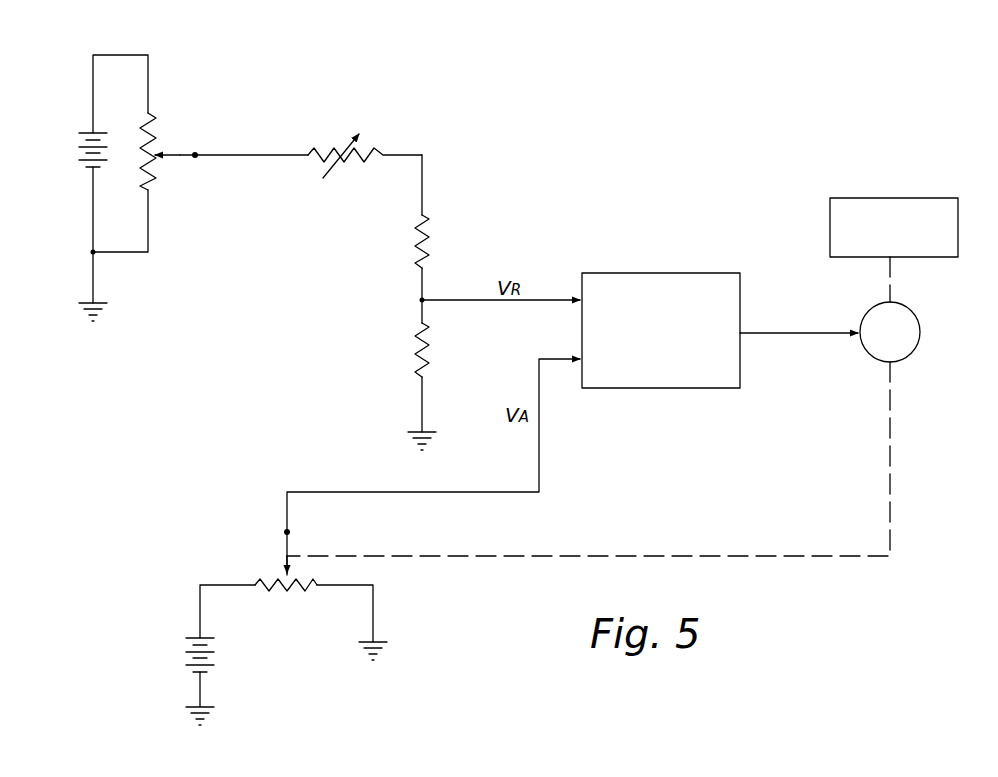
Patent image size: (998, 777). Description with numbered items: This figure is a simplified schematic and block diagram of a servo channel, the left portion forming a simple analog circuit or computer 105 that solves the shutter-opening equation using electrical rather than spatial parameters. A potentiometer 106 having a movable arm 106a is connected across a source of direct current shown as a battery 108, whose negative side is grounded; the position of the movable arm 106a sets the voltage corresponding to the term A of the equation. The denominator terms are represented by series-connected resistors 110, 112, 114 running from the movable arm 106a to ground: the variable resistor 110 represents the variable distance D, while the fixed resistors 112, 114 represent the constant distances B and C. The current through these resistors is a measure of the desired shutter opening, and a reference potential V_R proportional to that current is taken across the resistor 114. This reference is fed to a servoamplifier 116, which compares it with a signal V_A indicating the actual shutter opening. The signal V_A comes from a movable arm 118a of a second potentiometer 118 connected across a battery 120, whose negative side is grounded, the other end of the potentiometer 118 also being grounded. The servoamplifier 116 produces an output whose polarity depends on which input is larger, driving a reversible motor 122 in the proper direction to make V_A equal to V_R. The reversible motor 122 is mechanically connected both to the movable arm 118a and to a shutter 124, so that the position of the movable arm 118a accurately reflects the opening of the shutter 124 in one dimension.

The analog circuit 105 is at (205, 235).
The potentiometer 106 is at (156, 133).
The movable arm 106a is at (181, 154).
The battery 108 is at (82, 147).
The variable resistor 110 is at (367, 153).
The resistor 112 is at (428, 240).
The resistor 114 is at (428, 350).
The servoamplifier 116 is at (652, 272).
The potentiometer 118 is at (288, 588).
The movable arm 118a is at (288, 543).
The battery 120 is at (220, 657).
The reversible motor 122 is at (920, 331).
The shutter 124 is at (884, 198).